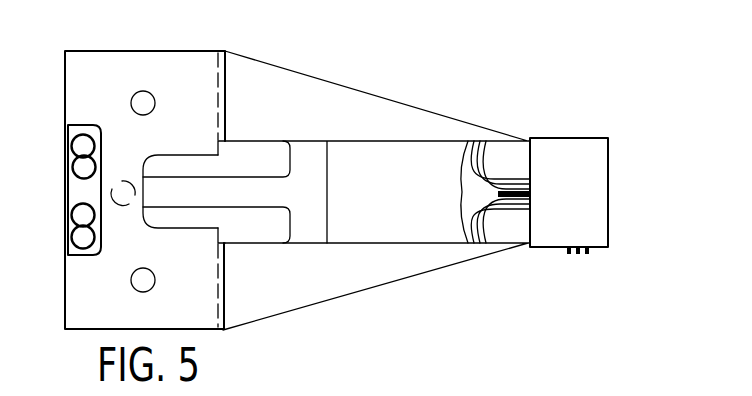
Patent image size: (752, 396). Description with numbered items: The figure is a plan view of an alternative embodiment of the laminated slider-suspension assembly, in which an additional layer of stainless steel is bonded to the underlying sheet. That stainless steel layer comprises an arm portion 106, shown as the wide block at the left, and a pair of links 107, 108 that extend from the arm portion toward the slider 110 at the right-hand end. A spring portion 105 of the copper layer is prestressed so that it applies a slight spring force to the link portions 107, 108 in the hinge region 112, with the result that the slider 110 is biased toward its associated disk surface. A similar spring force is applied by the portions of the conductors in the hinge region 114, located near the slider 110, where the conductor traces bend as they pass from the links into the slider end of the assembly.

The spring portion 105 is at (233, 185).
The arm portion 106 is at (95, 62).
The link 107 is at (328, 105).
The link 108 is at (358, 273).
The slider 110 is at (590, 158).
The hinge region 112 is at (220, 332).
The hinge region 114 is at (517, 130).